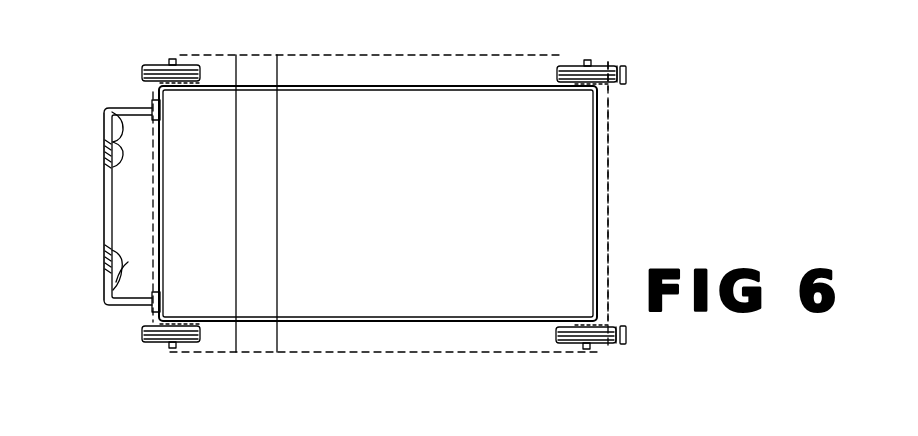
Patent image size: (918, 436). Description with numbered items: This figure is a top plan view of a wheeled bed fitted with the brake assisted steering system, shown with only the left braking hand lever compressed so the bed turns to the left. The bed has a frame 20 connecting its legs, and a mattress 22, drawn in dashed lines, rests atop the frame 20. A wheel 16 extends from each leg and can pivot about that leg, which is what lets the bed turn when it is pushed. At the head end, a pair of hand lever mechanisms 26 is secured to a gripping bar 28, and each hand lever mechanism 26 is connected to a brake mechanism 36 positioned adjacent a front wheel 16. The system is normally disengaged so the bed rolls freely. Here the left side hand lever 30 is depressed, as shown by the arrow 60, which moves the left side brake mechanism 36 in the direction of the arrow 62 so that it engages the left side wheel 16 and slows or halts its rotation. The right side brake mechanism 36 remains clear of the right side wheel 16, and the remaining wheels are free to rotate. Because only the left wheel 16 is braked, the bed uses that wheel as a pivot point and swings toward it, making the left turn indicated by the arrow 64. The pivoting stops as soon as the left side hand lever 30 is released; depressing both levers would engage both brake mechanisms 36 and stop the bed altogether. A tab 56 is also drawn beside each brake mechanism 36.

The wheel 16 is at (150, 67).
The frame 20 is at (381, 324).
The mattress 22 is at (336, 435).
The hand lever mechanism 26 is at (101, 129).
The gripping bar 28 is at (102, 212).
The hand lever 30 is at (126, 116).
The brake mechanism 36 is at (632, 50).
The tab 56 is at (622, 86).
The arrow indicating depression of left side hand lever 60 is at (120, 154).
The arrow indicating direction of movement of left side brake mechanism 62 is at (625, 72).
The arrow indicating bed making left turn 64 is at (630, 208).